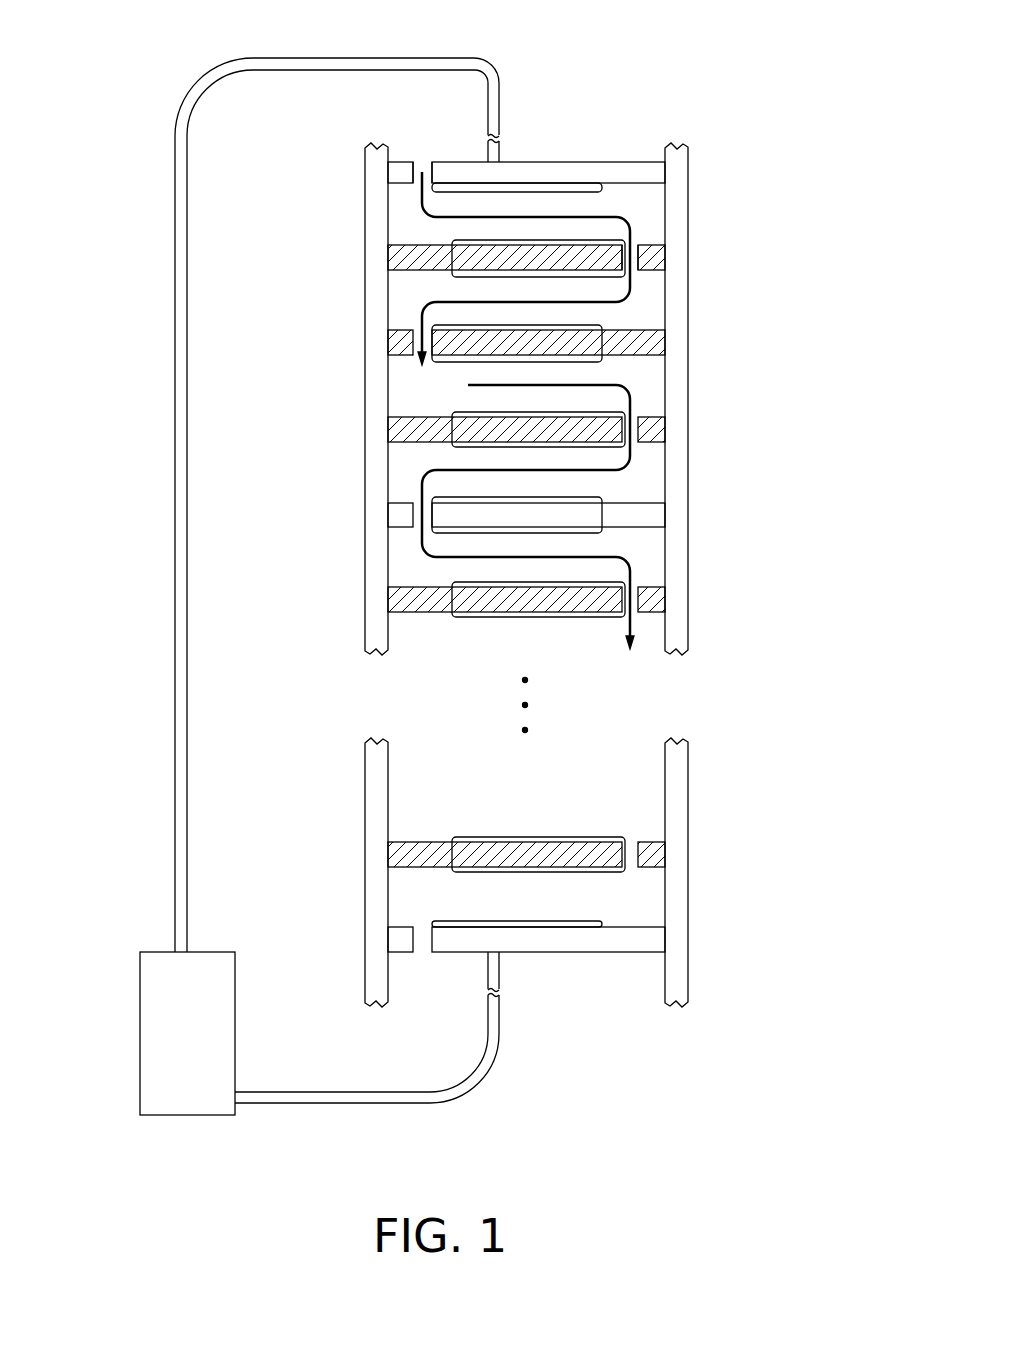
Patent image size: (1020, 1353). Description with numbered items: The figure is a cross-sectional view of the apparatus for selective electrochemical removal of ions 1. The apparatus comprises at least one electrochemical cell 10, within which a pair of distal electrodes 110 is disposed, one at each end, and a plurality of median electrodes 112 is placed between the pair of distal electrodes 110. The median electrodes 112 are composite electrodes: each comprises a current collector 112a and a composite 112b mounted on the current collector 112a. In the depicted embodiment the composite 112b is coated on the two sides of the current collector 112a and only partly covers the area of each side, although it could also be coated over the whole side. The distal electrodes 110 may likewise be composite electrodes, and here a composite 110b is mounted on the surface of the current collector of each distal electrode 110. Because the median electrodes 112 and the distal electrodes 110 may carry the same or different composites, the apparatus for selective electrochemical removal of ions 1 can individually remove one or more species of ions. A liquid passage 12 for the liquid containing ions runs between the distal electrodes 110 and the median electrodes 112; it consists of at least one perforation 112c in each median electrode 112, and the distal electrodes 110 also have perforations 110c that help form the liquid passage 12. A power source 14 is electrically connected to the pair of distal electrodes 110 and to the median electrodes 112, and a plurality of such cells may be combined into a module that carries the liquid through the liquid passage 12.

The apparatus for selective electrochemical removal of ions 1 is at (804, 16).
The electrochemical cell 10 is at (677, 220).
The distal electrode 110 is at (618, 170).
The composite 110b is at (558, 185).
The perforation 110c is at (430, 170).
The median electrode 112 is at (436, 540).
The current collector 112a is at (397, 262).
The composite 112b is at (457, 244).
The perforation 112c is at (620, 284).
The liquid passage 12 is at (416, 323).
The power source 14 is at (150, 983).